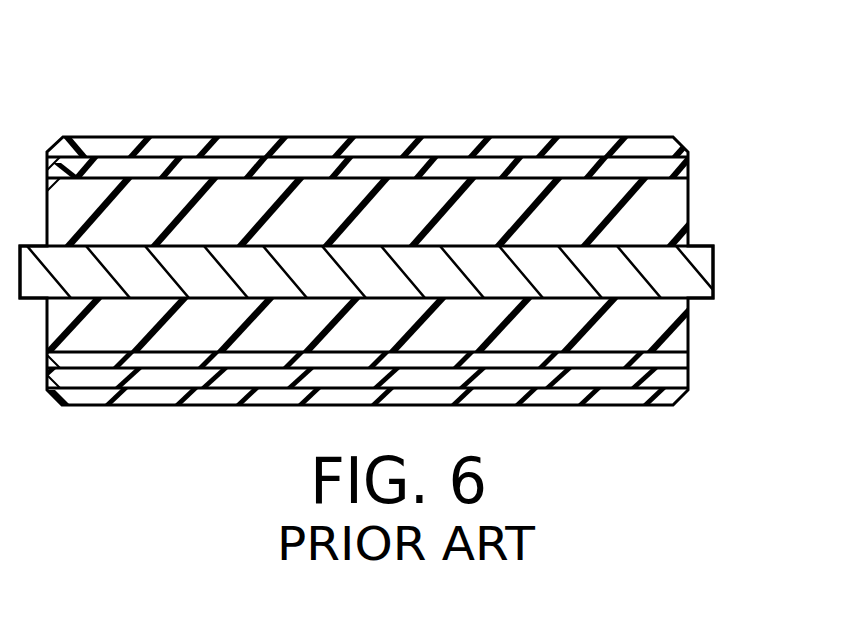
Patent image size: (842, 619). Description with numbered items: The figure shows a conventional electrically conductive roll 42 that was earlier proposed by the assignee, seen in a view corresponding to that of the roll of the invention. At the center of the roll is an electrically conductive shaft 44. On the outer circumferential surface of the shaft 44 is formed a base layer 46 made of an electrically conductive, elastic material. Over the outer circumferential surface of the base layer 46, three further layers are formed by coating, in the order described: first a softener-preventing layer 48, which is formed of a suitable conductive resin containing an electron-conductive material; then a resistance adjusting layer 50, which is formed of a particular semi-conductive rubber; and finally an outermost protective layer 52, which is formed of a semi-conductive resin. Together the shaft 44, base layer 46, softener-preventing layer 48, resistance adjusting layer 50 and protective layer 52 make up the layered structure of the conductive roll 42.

The conductive roll 42 is at (672, 114).
The electrically conductive shaft 44 is at (699, 270).
The base layer 46 is at (672, 213).
The softener-preventing layer 48 is at (668, 186).
The resistance adjusting layer 50 is at (678, 373).
The protective layer 52 is at (622, 398).